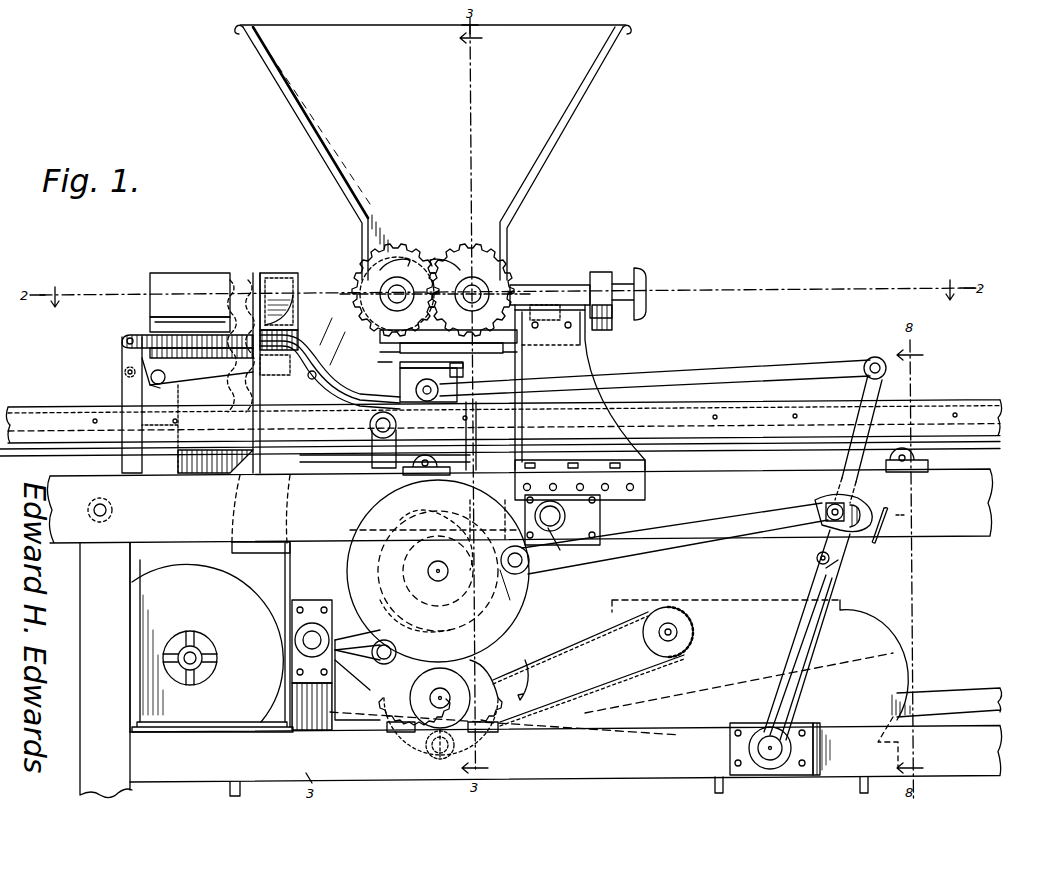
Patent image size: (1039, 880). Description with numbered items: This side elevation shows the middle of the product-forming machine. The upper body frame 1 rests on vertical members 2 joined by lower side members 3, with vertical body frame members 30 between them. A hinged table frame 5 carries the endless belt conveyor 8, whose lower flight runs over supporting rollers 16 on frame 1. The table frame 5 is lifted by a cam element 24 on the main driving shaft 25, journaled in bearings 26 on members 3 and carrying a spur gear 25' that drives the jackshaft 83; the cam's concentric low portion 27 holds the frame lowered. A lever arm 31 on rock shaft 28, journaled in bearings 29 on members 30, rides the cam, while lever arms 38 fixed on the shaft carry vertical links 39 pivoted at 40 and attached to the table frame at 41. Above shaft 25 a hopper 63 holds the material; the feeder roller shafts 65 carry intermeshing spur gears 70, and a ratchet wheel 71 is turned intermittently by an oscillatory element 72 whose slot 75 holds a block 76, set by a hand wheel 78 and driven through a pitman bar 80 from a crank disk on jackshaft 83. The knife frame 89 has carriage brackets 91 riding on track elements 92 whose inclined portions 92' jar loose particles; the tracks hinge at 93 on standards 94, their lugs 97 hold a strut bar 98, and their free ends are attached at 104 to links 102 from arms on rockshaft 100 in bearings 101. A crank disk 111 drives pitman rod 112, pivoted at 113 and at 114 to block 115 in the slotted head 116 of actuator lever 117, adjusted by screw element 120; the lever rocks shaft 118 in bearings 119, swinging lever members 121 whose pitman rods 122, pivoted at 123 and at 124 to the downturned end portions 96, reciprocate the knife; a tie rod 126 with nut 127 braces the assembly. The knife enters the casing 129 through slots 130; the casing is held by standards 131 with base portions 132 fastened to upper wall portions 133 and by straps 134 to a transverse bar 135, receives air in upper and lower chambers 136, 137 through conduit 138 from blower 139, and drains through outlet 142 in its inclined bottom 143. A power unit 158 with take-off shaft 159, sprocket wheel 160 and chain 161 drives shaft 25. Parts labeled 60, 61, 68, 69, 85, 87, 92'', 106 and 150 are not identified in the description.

The upper body frame portion 1 is at (388, 528).
The vertical members 2 is at (78, 628).
The lower longitudinal side members 3 is at (566, 761).
The table frame 5 is at (950, 402).
The endless belt conveyor 8 is at (1007, 375).
The supporting rollers 16 is at (928, 462).
The cam element 24 is at (400, 690).
The main driving shaft 25 is at (434, 723).
The spur gear 25' is at (541, 680).
The bearings 26 is at (410, 703).
The concentric low peripheral portion 27 is at (478, 672).
The rock shaft 28 is at (300, 635).
The bearings 29 is at (300, 649).
The vertical body frame members 30 is at (300, 562).
The lever arm 31 is at (335, 630).
The lever arms 38 is at (357, 680).
The vertical link members 39 is at (375, 460).
The pivot 40 is at (378, 650).
The pivot 41 is at (368, 428).
The cam bar 60 is at (955, 690).
The shaft axis 61 is at (439, 764).
The hopper 63 is at (553, 143).
The feeder roller shafts 65 is at (480, 288).
The plate 68 is at (380, 338).
The housing 69 is at (612, 364).
The spur gears 70 is at (450, 268).
The ratchet wheel 71 is at (505, 262).
The oscillatory element 72 is at (600, 270).
The longitudinal slot 75 is at (605, 310).
The block 76 is at (558, 290).
The hand wheel 78 is at (642, 268).
The pitman bar 80 is at (520, 470).
The jackshaft 83 is at (438, 571).
The bolt holes 85 is at (535, 350).
The plate 87 is at (451, 340).
The knife frame 89 is at (465, 366).
The carriage brackets 91 is at (419, 362).
The track elements 92 is at (275, 372).
The inclined intermediate portions 92' is at (334, 322).
The guide plate lower 92'' is at (346, 341).
The pivotal axis 93 is at (130, 336).
The standards 94 is at (125, 392).
The downturned end portions 96 is at (371, 362).
The lugs 97 is at (313, 388).
The strut bar 98 is at (300, 382).
The rockshaft 100 is at (555, 528).
The bearings 101 is at (575, 522).
The vertical link members 102 is at (470, 500).
The pivot 104 is at (551, 387).
The cam track 106 is at (438, 563).
The crank disk 111 is at (352, 528).
The pitman rod 112 is at (710, 522).
The pivot 113 is at (528, 570).
The pivot 114 is at (822, 510).
The block 115 is at (876, 544).
The slotted head 116 is at (865, 505).
The actuator lever 117 is at (815, 585).
The rockshaft 118 is at (790, 745).
The bearings 119 is at (732, 752).
The screw element 120 is at (905, 510).
The lever members 121 is at (848, 464).
The pitman rods 122 is at (715, 372).
The pivot 123 is at (874, 356).
The pivot 124 is at (428, 402).
The tie rod 126 is at (815, 556).
The nut 127 is at (838, 568).
The casing 129 is at (170, 273).
The horizontal slots 130 is at (196, 315).
The standards 131 is at (238, 392).
The base portions 132 is at (212, 460).
The upper side wall portions 133 is at (222, 274).
The supporting straps 134 is at (148, 378).
The transverse bar 135 is at (122, 372).
The upper chamber 136 is at (280, 270).
The lower chamber 137 is at (280, 330).
The conduit 138 is at (275, 490).
The blower 139 is at (211, 637).
The outlet 142 is at (167, 388).
The bottom 143 is at (175, 429).
The plate 150 is at (380, 350).
The power unit 158 is at (723, 593).
The power take-off shaft 159 is at (668, 625).
The sprocket wheel 160 is at (645, 640).
The endless chain 161 is at (560, 615).